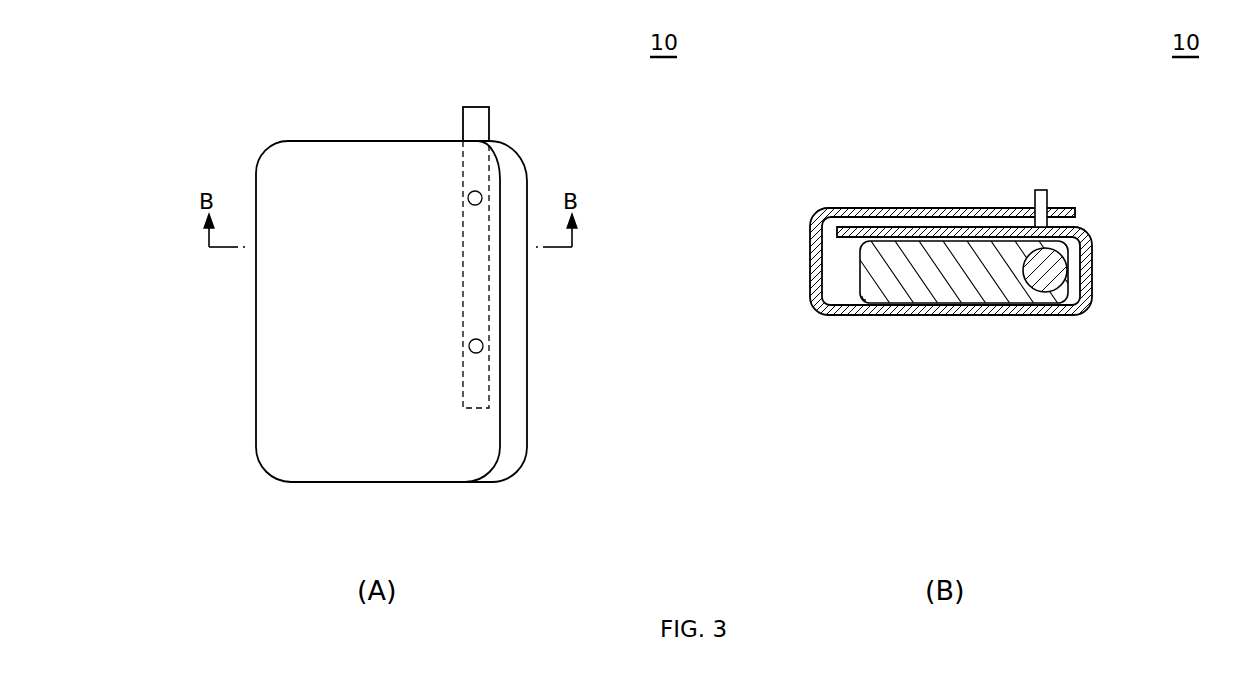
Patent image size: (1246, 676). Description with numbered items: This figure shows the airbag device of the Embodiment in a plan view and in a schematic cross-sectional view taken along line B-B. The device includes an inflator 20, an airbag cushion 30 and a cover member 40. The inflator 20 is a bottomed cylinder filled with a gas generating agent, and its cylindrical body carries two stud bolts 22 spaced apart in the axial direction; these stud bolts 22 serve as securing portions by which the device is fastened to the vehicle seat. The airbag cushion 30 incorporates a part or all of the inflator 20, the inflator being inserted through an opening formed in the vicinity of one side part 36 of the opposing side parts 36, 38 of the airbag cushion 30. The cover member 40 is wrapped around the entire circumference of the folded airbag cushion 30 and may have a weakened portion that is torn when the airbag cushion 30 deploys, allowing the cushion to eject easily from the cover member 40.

The inflator 20 is at (475, 282).
The stud bolts 22 is at (482, 194).
The airbag cushion 30 is at (955, 283).
The one side part 36 is at (1093, 275).
The side part 38 is at (860, 277).
The cover member 40 is at (257, 397).